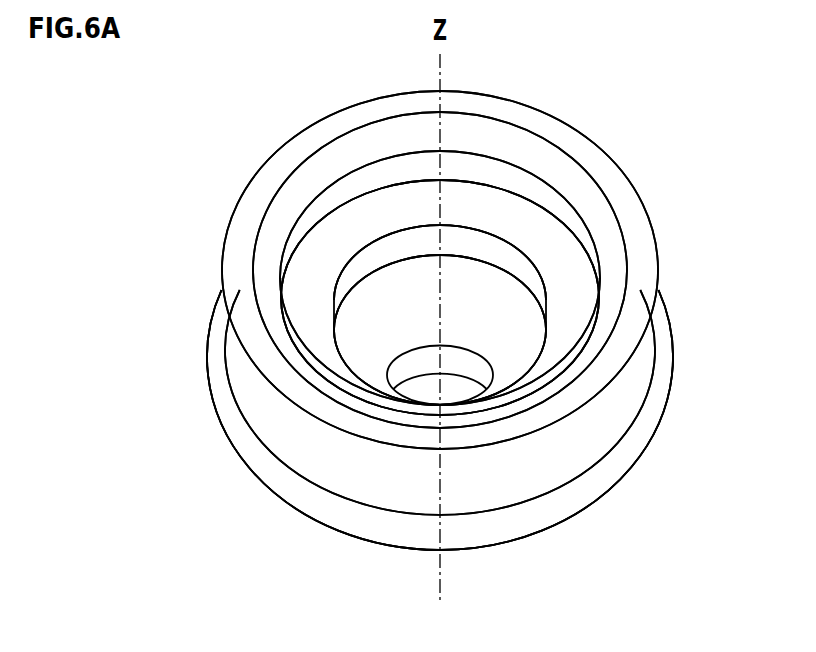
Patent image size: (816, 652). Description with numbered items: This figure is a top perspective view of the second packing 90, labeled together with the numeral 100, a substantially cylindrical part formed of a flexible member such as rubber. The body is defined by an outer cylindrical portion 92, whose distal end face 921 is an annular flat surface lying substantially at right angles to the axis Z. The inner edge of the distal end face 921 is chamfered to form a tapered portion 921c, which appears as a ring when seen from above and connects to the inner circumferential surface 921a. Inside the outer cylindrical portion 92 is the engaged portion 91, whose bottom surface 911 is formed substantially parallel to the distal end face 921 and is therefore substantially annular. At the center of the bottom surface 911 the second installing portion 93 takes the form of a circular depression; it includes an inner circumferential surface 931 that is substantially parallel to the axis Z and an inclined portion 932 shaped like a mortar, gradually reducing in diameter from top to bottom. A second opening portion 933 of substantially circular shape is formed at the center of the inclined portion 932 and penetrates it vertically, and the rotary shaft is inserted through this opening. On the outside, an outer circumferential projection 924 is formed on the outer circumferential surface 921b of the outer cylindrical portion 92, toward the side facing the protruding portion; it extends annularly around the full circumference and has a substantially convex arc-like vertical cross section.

The second packing 90 is at (360, 320).
The rotating device component 100 is at (196, 228).
The engaged portion 91 is at (463, 167).
The bottom surface 911 is at (415, 207).
The outer cylindrical portion 92 is at (625, 388).
The distal end face 921 is at (610, 180).
The inner circumferential surface 921a is at (500, 177).
The outer circumferential surface 921b is at (603, 420).
The tapered portion 921c is at (553, 170).
The outer circumferential projection 924 is at (250, 435).
The second installing portion 93 is at (395, 300).
The inner circumferential surface 931 is at (392, 252).
The inclined portion 932 is at (378, 327).
The second opening portion 933 is at (478, 348).